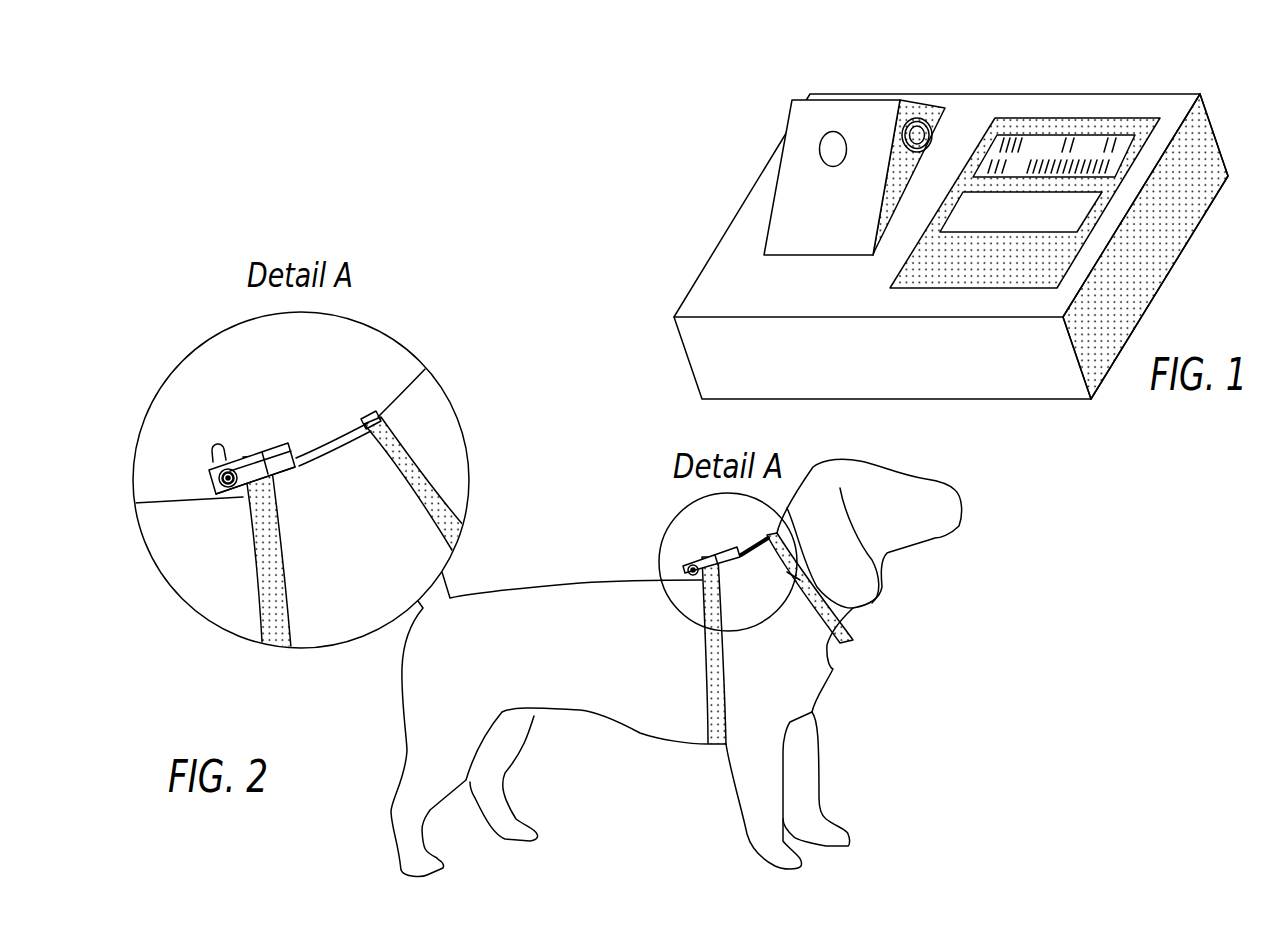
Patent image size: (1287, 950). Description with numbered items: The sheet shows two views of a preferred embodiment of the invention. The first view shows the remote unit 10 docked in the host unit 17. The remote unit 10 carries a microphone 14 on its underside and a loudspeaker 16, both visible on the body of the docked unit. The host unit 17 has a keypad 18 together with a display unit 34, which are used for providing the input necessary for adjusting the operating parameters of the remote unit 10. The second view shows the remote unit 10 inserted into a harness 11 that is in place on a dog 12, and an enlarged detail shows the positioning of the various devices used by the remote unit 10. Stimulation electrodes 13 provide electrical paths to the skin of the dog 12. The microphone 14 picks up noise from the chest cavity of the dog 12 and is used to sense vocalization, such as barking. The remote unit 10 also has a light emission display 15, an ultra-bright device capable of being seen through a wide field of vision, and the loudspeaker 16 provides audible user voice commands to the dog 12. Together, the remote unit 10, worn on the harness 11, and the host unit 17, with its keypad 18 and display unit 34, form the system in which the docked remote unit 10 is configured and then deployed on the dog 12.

In FIG. 1, the remote unit 10 is at (775, 139).
In FIG. 2, the remote unit 10 is at (263, 440).
In FIG. 2, the harness 11 is at (415, 477).
In FIG. 2, the dog 12 is at (938, 478).
In FIG. 2, the stimulation electrodes 13 is at (366, 412).
In FIG. 1, the microphone 14 is at (833, 147).
In FIG. 2, the microphone 14 is at (280, 493).
In FIG. 2, the light emission display (LED) 15 is at (202, 447).
In FIG. 1, the loudspeaker 16 is at (931, 127).
In FIG. 2, the loudspeaker 16 is at (236, 488).
In FIG. 1, the host unit 17 is at (1213, 132).
In FIG. 1, the keypad 18 is at (1087, 198).
In FIG. 1, the display unit 34 is at (1048, 147).